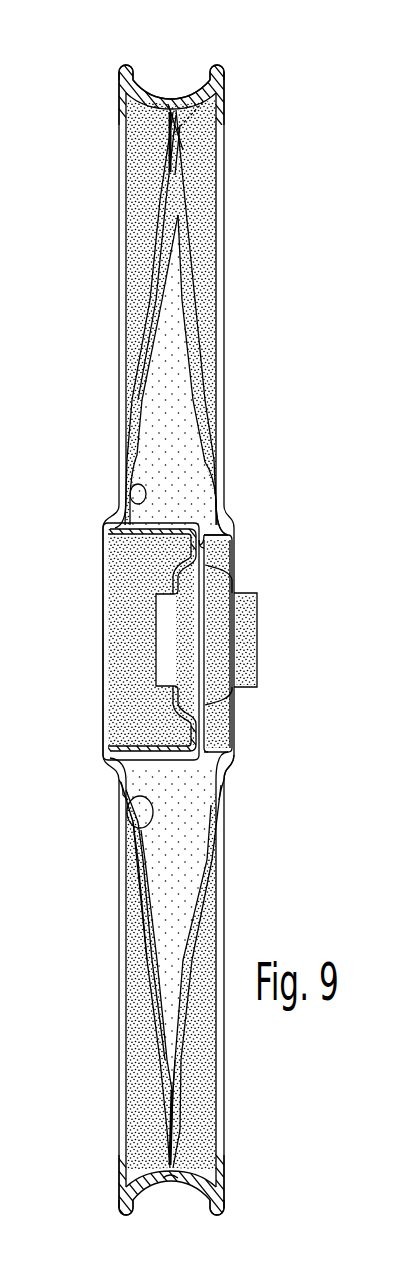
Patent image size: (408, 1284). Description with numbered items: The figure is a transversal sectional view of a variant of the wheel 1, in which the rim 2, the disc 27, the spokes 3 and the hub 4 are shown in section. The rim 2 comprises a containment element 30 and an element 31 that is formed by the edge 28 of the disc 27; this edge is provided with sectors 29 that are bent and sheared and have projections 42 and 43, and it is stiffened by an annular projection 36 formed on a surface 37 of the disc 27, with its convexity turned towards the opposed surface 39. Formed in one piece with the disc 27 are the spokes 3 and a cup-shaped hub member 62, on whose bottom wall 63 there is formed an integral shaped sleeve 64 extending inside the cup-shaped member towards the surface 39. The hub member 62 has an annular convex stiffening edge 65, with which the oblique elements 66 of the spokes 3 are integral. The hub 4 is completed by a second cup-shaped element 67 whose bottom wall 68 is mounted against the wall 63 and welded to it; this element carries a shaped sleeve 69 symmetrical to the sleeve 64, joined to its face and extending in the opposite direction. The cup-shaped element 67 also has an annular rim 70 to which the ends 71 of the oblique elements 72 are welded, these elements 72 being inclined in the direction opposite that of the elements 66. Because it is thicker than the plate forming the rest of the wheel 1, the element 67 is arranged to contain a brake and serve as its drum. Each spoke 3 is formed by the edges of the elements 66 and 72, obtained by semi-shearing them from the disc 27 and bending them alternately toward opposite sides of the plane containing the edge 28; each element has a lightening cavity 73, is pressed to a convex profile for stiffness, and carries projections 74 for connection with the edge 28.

The wheel 1 is at (232, 92).
The rim 2 is at (173, 88).
The spokes 3 is at (229, 295).
The hub 4 is at (258, 560).
The disc 27 is at (220, 793).
The edge 28 is at (192, 1158).
The sectors 29 is at (113, 94).
The containment element 30 is at (148, 88).
The element 31 is at (196, 131).
The annular projection 36 is at (172, 136).
The surface 37 is at (140, 942).
The opposed surface 39 is at (231, 505).
The projection 42 is at (189, 116).
The projection 43 is at (164, 1183).
The hub member 62 is at (216, 580).
The bottom wall 63 is at (233, 737).
The shaped sleeve 64 is at (236, 700).
The annular convex stiffening edge 65 is at (229, 764).
The oblique elements 66 is at (193, 392).
The second cup-shaped element 67 is at (197, 548).
The bottom wall 68 is at (198, 553).
The shaped sleeve 69 is at (200, 705).
The annular rim 70 is at (120, 785).
The ends 71 is at (124, 508).
The oblique elements 72 is at (150, 323).
The lightening cavity 73 is at (182, 1047).
The projections 74 is at (182, 163).